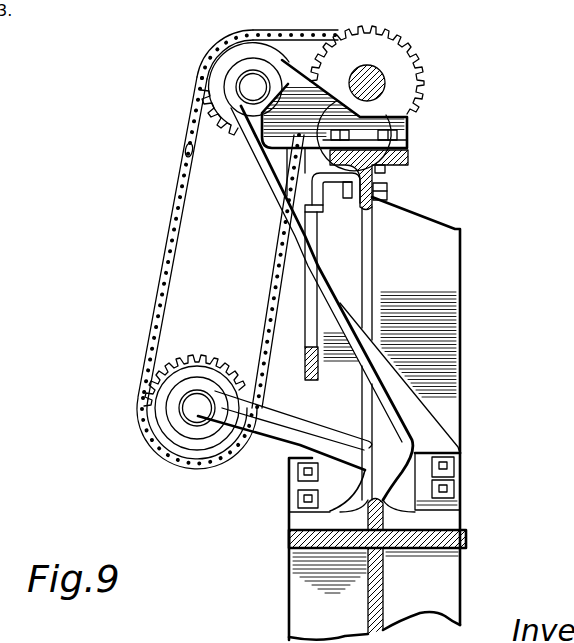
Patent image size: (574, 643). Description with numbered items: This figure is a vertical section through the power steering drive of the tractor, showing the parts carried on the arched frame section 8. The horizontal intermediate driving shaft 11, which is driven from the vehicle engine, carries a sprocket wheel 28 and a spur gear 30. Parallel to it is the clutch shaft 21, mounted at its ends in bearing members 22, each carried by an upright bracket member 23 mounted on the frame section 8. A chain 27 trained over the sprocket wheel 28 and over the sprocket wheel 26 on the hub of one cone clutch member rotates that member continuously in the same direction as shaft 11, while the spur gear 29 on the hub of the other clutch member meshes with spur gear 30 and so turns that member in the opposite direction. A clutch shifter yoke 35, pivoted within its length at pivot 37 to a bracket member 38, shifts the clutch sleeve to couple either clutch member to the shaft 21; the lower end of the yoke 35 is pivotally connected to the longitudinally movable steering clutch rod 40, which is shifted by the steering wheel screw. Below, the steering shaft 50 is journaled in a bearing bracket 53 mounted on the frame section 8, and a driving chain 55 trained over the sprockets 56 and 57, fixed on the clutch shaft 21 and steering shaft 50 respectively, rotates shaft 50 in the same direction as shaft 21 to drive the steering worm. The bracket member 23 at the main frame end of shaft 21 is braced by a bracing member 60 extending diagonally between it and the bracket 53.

The arched frame section 8 is at (368, 230).
The horizontal intermediate driving shaft 11 is at (384, 82).
The clutch shaft 21 is at (253, 81).
The bearing member 22 is at (236, 85).
The bracket member 23 is at (270, 145).
The sprocket wheel 26 is at (244, 28).
The chain 27 is at (317, 28).
The sprocket wheel 28 is at (411, 50).
The spur gear 29 is at (188, 122).
The spur gear 30 is at (427, 97).
The clutch shifter yoke 35 is at (300, 291).
The pivot 37 is at (315, 198).
The bracket member 38 is at (410, 165).
The steering clutch rod 40 is at (318, 375).
The steering shaft 50 is at (191, 401).
The bearing bracket 53 is at (380, 464).
The driving chain 55 is at (173, 226).
The sprocket 56 is at (186, 151).
The sprocket 57 is at (168, 447).
The bracing member 60 is at (283, 257).